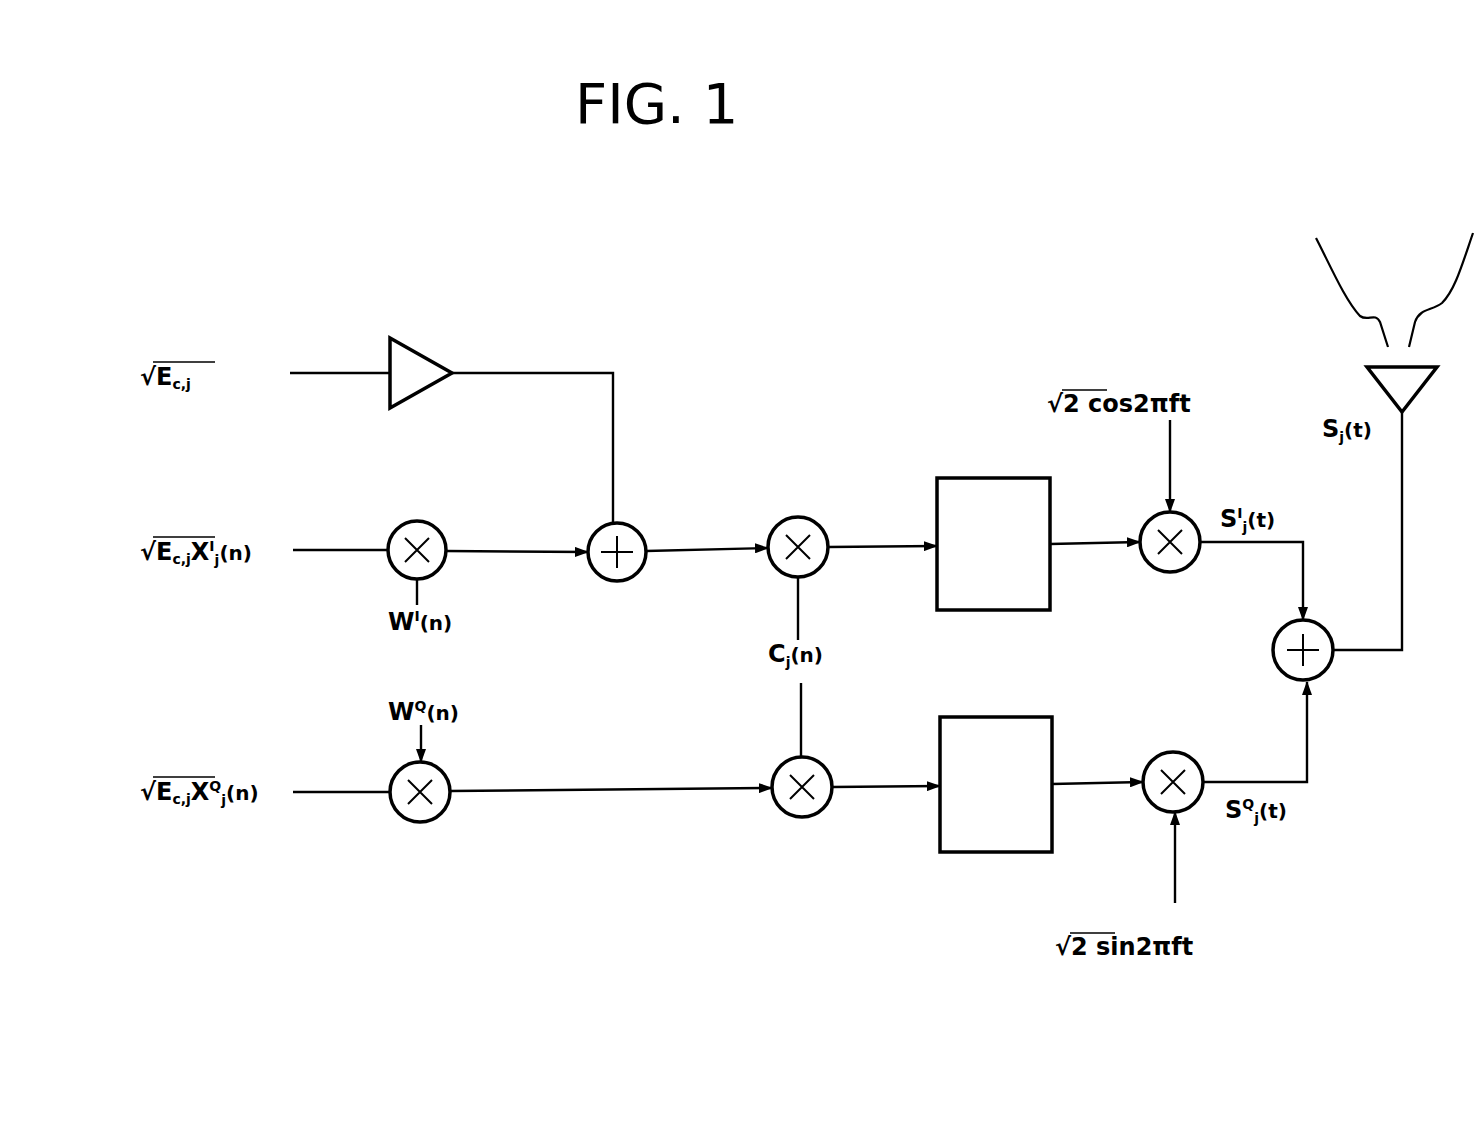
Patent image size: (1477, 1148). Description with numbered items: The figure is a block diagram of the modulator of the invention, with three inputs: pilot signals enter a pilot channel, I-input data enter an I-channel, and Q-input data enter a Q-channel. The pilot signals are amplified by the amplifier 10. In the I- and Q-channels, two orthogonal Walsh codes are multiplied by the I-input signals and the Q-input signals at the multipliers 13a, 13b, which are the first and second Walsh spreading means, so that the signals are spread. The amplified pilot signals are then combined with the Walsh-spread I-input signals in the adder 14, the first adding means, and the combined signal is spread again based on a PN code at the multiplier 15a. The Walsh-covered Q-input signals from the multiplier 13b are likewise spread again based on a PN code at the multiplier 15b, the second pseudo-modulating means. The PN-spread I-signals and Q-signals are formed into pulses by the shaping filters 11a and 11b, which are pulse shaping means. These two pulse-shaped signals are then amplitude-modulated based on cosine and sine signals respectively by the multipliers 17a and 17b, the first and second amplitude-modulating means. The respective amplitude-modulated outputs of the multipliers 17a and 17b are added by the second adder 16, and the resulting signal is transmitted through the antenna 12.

The amplifier 10 is at (432, 352).
The shaping filter 11a is at (958, 478).
The shaping filter 11b is at (963, 852).
The antenna 12 is at (1367, 367).
The multiplier 13a is at (390, 570).
The multiplier 13b is at (395, 814).
The adder 14 is at (595, 574).
The multiplier 15a is at (793, 516).
The multiplier 15b is at (788, 812).
The second adder 16 is at (1325, 675).
The multiplier 17a is at (1165, 573).
The multiplier 17b is at (1160, 755).